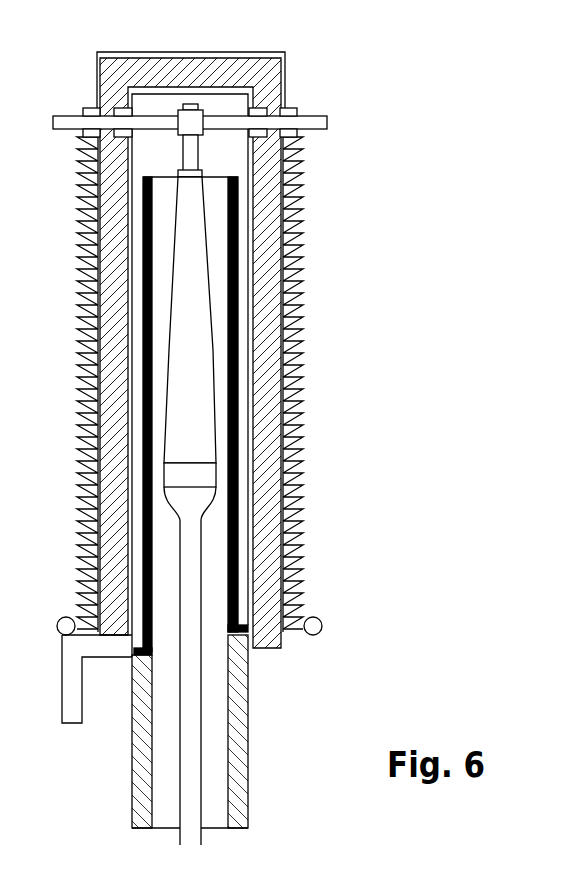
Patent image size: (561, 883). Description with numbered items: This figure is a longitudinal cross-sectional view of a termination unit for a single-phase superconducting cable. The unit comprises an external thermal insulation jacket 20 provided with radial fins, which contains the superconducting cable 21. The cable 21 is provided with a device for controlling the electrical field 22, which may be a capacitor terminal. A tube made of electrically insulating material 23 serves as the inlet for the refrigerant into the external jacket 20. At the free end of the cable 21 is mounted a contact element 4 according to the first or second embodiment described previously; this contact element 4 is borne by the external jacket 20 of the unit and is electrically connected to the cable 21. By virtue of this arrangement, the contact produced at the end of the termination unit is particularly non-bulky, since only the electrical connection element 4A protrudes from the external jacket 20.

The contact element 4 is at (216, 120).
The electrical connection element 4A is at (318, 122).
The external thermal insulation jacket 20 is at (302, 329).
The superconducting cable 21 is at (190, 742).
The device for controlling the electrical field 22 is at (178, 347).
The tube made of electrically insulating material 23 is at (238, 390).